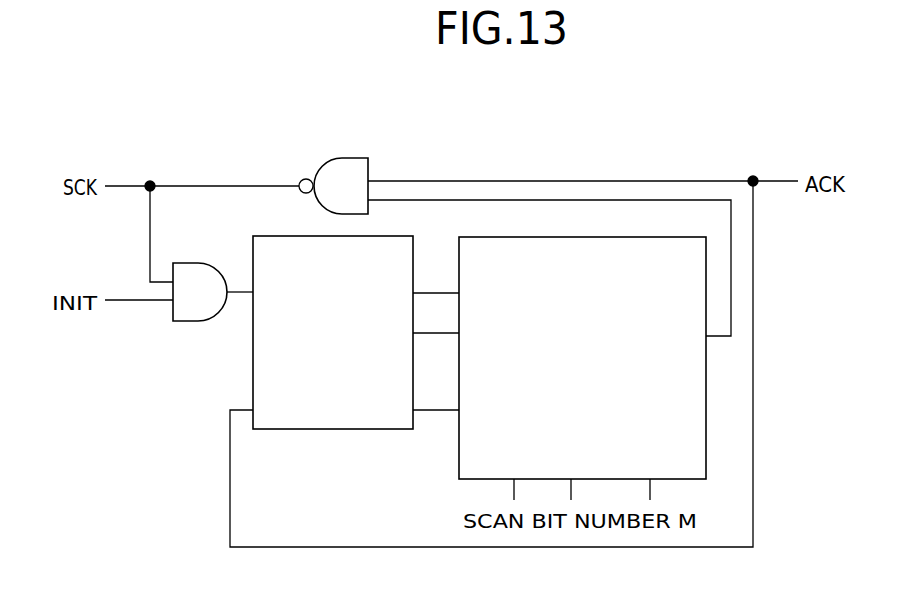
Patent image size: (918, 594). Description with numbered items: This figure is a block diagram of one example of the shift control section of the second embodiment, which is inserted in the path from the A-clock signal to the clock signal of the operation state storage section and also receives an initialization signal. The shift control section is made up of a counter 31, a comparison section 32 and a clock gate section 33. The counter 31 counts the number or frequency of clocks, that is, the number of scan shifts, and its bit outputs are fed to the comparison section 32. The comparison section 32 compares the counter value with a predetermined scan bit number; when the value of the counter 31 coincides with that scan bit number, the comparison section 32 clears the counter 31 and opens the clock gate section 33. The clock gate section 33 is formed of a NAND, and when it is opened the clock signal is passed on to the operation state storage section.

The counter 31 is at (252, 326).
The comparison section 32 is at (458, 447).
The clock gate section 33 is at (351, 158).